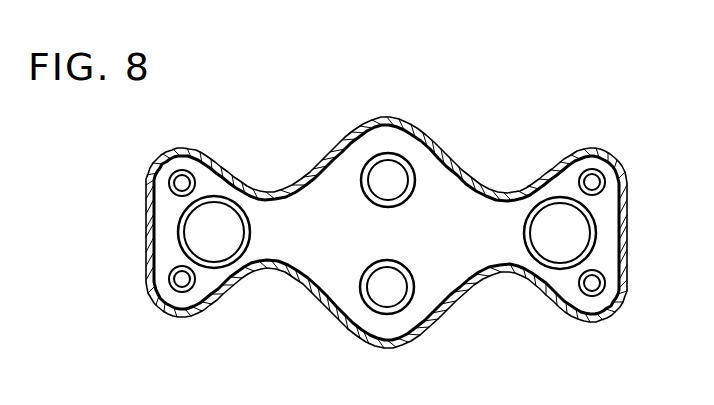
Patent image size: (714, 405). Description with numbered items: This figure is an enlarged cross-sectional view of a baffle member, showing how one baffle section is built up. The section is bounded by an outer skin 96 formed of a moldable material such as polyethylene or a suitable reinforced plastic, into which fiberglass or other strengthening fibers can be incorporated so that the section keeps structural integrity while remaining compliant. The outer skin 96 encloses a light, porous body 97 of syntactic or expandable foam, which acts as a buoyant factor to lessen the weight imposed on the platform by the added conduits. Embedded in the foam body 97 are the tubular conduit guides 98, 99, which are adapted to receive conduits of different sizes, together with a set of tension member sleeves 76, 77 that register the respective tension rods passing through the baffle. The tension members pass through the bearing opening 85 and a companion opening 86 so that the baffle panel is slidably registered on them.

The tension member sleeve 76 is at (184, 170).
The tension member sleeve 77 is at (186, 292).
The bearing opening 85 is at (182, 278).
The upper mounting hole 86 is at (180, 184).
The outer skin 96 is at (568, 160).
The porous body 97 is at (455, 228).
The tubular conduit guide 98 is at (366, 162).
The tubular conduit guide 99 is at (236, 200).